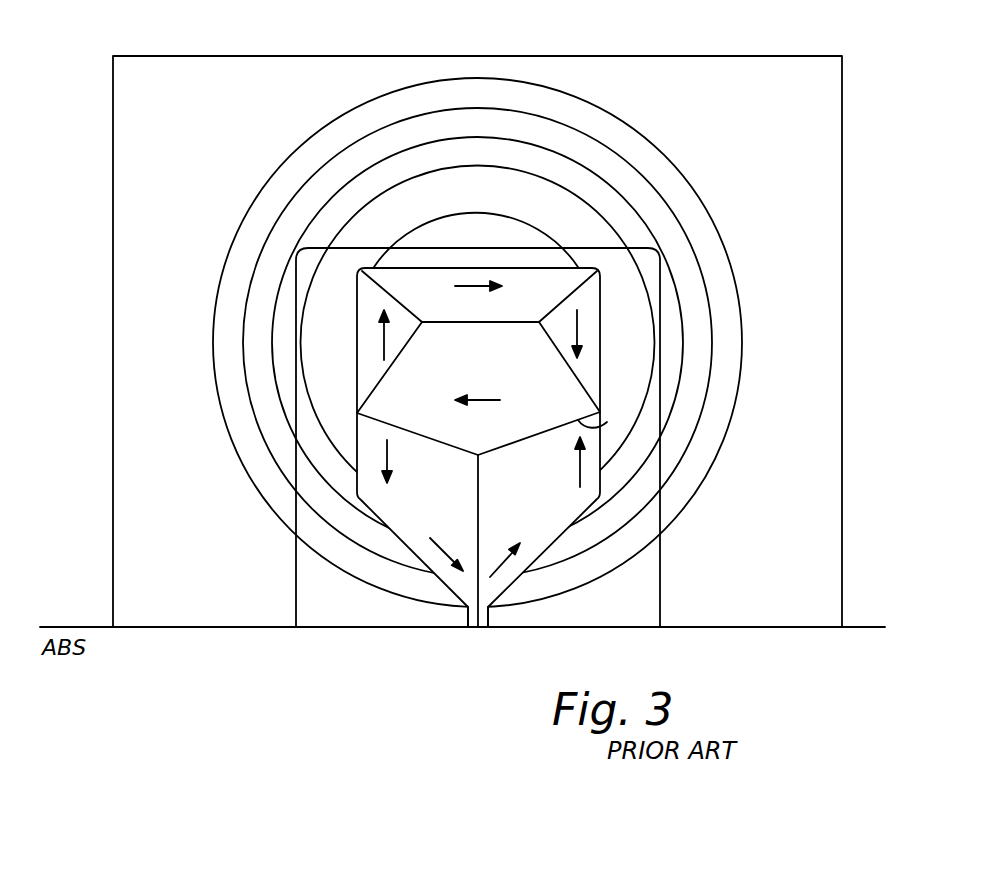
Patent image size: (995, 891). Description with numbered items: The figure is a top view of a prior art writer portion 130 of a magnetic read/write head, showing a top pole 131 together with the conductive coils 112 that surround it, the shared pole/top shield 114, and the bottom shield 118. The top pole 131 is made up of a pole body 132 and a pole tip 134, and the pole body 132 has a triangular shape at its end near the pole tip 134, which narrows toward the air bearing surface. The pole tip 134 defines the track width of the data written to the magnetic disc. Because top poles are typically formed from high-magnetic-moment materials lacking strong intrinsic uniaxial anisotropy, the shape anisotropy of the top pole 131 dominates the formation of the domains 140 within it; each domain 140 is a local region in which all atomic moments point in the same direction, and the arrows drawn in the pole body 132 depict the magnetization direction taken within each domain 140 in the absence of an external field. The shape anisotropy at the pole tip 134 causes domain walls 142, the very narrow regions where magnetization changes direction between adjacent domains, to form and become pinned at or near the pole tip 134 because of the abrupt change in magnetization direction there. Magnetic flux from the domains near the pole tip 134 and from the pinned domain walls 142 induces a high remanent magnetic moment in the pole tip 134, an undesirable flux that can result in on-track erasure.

The conductive coils 112 is at (327, 202).
The shared pole/top shield 114 is at (625, 598).
The bottom shield 118 is at (790, 113).
The prior art writer portion 130 is at (282, 547).
The top pole 131 is at (600, 483).
The pole body 132 is at (502, 443).
The pole tip 134 is at (478, 627).
The domains 140 is at (470, 284).
The domain walls 142 is at (599, 470).